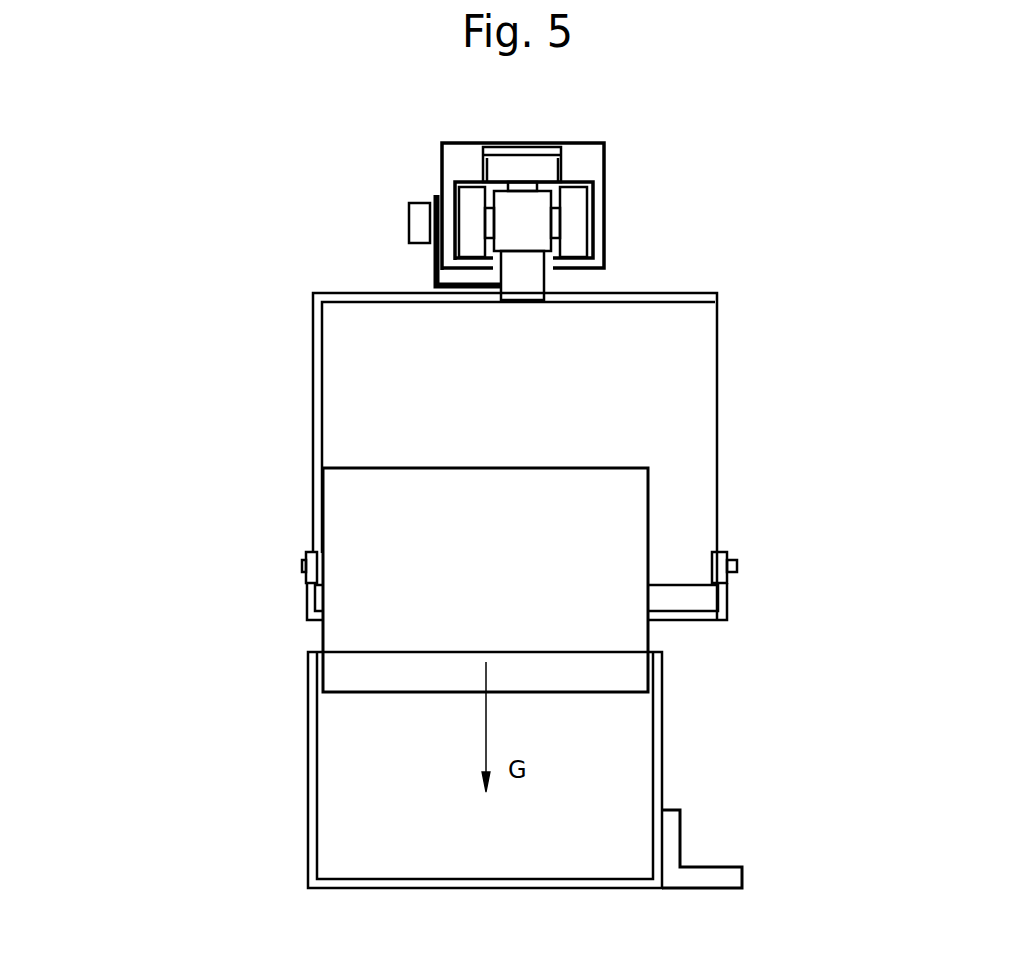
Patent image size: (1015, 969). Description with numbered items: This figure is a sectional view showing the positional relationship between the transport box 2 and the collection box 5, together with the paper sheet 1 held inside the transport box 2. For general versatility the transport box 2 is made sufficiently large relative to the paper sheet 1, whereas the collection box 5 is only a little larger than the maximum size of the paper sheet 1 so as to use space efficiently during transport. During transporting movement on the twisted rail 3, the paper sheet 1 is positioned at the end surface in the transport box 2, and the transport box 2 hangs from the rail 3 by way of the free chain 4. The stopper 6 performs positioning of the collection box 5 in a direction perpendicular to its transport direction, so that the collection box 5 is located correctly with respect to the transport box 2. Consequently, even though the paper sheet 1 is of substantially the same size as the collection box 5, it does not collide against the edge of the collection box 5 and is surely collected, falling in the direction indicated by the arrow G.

The paper sheet 1 is at (648, 507).
The transport box 2 is at (313, 398).
The twisted rail 3 is at (604, 188).
The free chain 4 is at (456, 197).
The collection box 5 is at (662, 688).
The stopper 6 is at (680, 830).